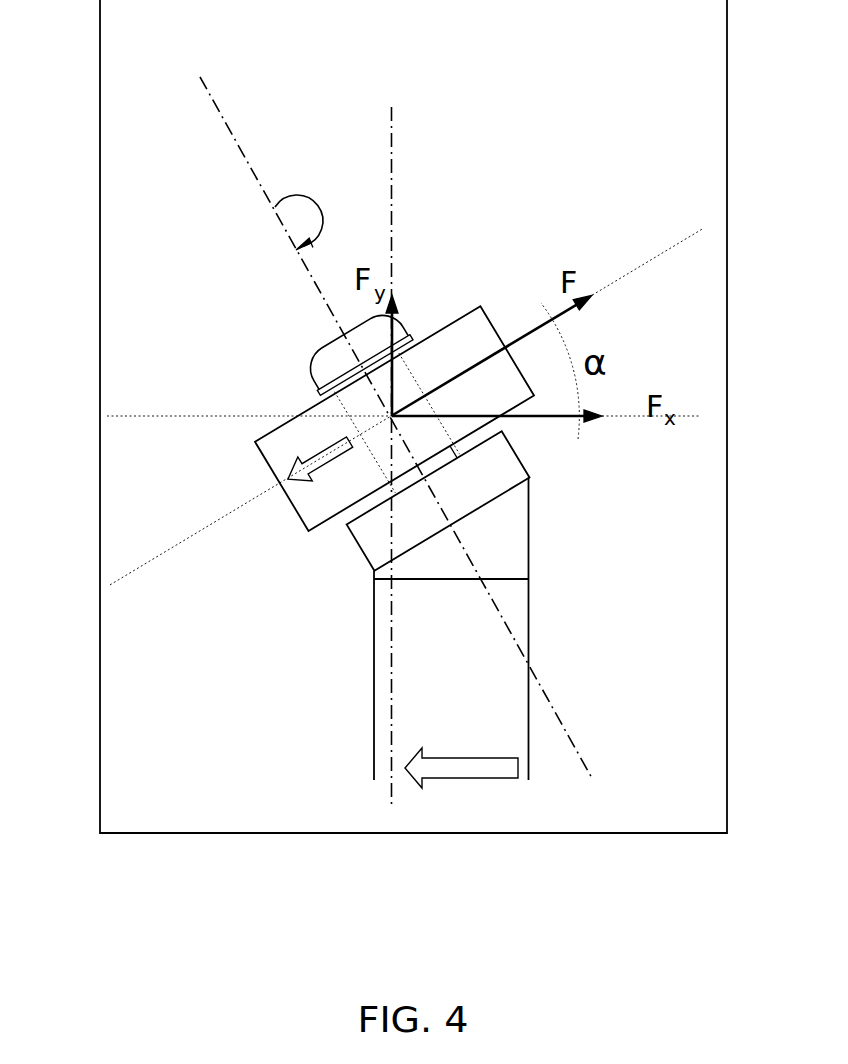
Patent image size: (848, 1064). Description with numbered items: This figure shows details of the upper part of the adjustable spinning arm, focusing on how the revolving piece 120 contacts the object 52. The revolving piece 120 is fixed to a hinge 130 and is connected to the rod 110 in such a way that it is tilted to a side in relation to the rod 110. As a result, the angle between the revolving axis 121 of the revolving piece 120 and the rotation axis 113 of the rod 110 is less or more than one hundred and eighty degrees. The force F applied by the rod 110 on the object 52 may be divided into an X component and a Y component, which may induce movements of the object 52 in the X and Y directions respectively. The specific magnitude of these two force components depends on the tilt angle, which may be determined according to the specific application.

The object 52 is at (138, 48).
The rod 110 is at (357, 695).
The rotation axis 113 is at (402, 170).
The revolving piece 120 is at (462, 298).
The revolving axis 121 is at (248, 157).
The hinge 130 is at (308, 363).